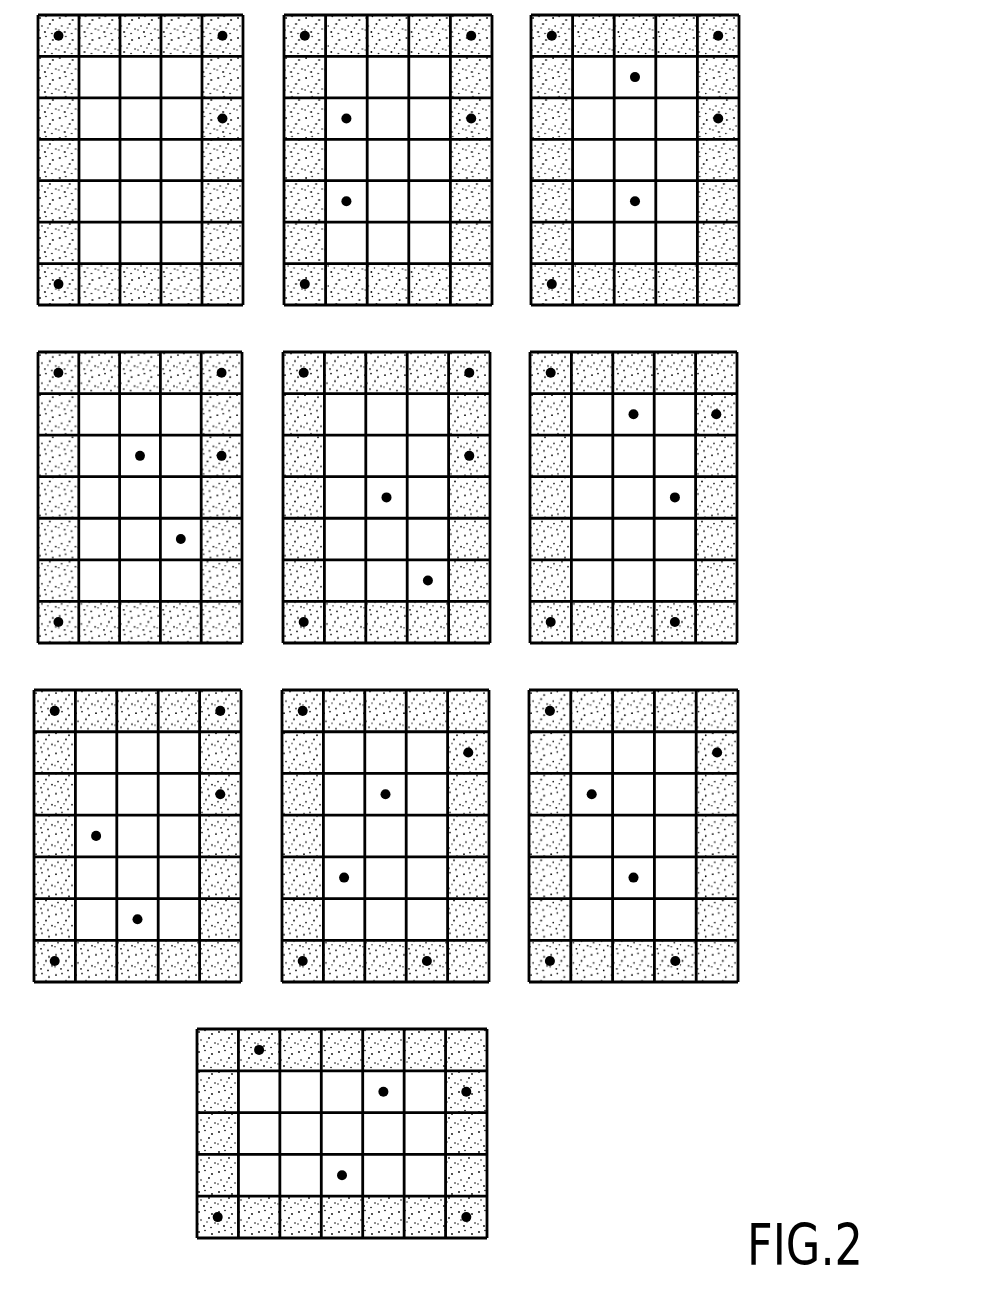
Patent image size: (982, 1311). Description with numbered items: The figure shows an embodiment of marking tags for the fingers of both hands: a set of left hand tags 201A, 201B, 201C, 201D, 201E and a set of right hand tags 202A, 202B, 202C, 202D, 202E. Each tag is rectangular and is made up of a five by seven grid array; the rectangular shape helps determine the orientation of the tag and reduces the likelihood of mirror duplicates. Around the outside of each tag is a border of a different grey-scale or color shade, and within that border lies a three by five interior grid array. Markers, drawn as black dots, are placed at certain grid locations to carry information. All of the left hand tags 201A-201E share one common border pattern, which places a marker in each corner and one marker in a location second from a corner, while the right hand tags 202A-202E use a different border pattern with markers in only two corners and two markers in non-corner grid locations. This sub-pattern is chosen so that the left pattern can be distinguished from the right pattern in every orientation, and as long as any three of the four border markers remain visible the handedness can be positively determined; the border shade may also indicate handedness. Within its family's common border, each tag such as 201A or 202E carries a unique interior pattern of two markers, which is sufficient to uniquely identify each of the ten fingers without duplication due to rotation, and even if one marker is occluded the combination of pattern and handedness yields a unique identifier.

The left hand tag 201A is at (135, 305).
The left hand tag 201B is at (381, 305).
The left hand tag 201C is at (628, 305).
The left hand tag 201D is at (135, 643).
The left hand tag 201E is at (380, 643).
The right hand tag 202A is at (627, 643).
The right hand tag 202B is at (131, 982).
The right hand tag 202C is at (379, 982).
The right hand tag 202D is at (627, 982).
The right hand tag 202E is at (375, 1238).